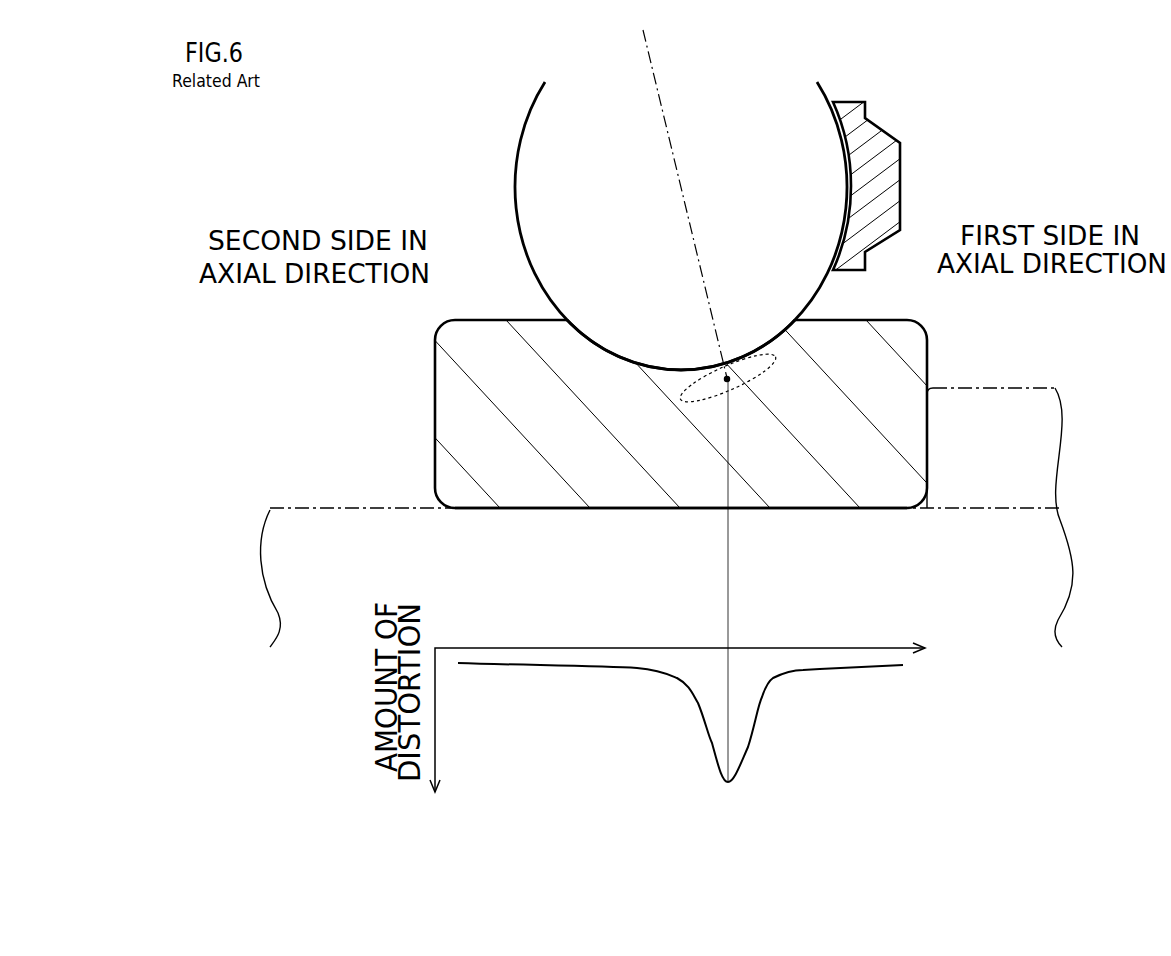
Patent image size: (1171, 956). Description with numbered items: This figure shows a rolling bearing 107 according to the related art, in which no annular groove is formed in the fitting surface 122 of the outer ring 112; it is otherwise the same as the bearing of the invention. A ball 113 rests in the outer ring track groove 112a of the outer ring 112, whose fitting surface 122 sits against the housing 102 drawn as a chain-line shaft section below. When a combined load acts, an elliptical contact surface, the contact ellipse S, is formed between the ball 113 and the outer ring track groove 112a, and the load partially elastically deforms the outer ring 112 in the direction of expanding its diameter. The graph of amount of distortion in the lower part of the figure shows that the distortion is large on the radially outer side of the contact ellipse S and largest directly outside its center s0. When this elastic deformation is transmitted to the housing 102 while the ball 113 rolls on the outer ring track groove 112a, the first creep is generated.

The rolling bearing 107 is at (880, 93).
The ball 113 is at (515, 192).
The outer ring track groove 112a is at (603, 348).
The outer ring 112 is at (928, 360).
The center of the contact ellipse s0 is at (727, 378).
The contact ellipse S is at (770, 382).
The housing 102 is at (308, 507).
The fitting surface 122 is at (832, 508).